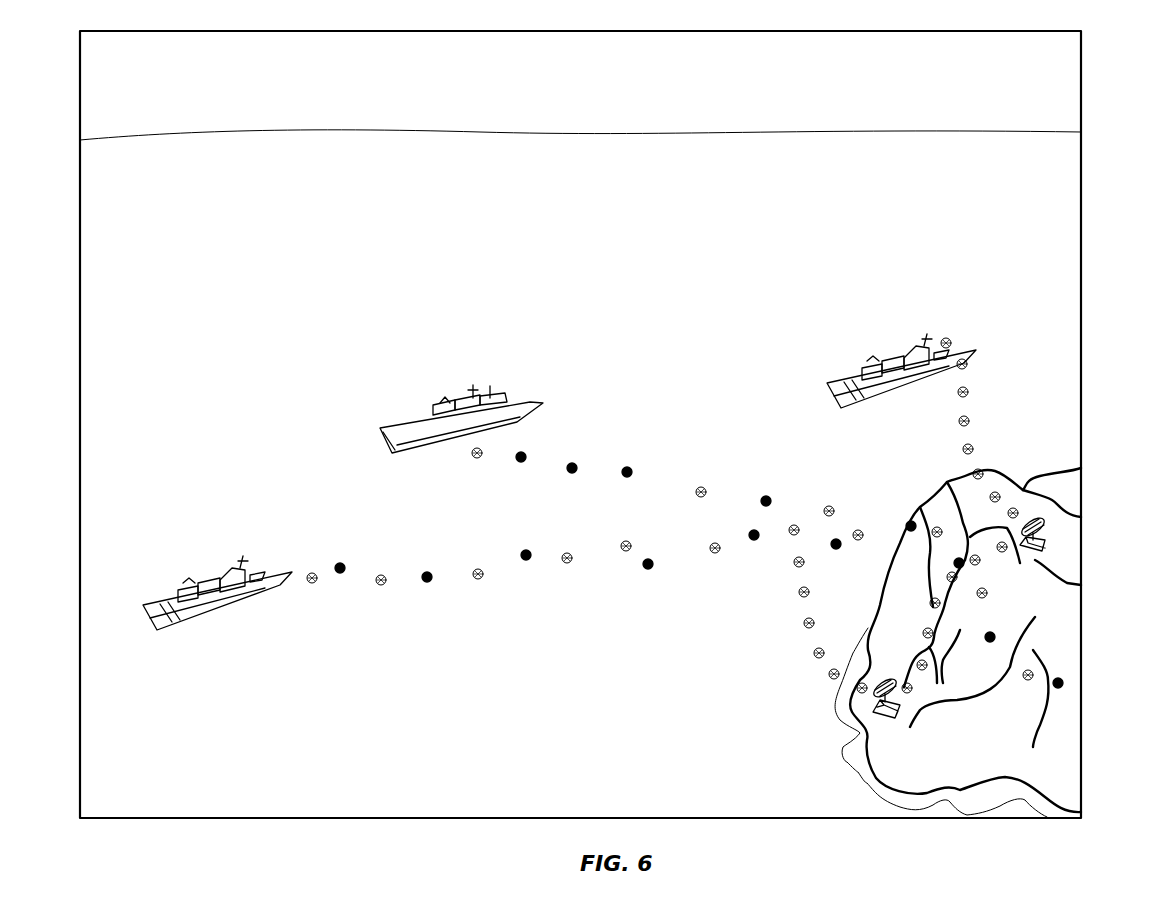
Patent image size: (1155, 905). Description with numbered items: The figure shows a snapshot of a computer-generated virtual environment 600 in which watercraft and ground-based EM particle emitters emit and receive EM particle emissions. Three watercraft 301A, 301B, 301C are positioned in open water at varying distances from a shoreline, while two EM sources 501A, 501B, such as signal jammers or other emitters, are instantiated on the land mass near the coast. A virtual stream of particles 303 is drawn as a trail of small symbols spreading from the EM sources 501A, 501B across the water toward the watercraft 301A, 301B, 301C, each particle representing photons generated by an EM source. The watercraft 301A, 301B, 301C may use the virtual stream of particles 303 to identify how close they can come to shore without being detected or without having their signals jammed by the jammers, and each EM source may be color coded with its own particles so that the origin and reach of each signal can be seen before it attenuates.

The virtual environment 600 is at (1081, 53).
The watercraft 301A is at (155, 605).
The watercraft 301B is at (402, 428).
The watercraft 301C is at (848, 383).
The virtual stream of particles 303 is at (701, 487).
The EM source 501A is at (877, 714).
The EM source 501B is at (1081, 585).